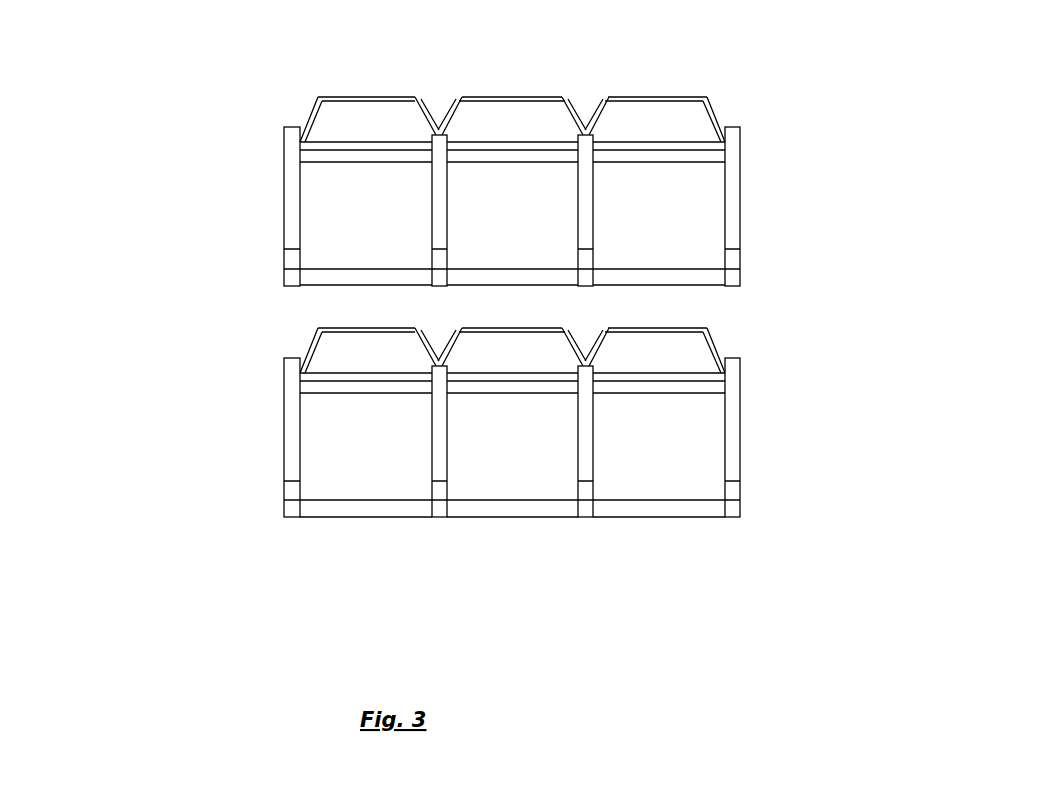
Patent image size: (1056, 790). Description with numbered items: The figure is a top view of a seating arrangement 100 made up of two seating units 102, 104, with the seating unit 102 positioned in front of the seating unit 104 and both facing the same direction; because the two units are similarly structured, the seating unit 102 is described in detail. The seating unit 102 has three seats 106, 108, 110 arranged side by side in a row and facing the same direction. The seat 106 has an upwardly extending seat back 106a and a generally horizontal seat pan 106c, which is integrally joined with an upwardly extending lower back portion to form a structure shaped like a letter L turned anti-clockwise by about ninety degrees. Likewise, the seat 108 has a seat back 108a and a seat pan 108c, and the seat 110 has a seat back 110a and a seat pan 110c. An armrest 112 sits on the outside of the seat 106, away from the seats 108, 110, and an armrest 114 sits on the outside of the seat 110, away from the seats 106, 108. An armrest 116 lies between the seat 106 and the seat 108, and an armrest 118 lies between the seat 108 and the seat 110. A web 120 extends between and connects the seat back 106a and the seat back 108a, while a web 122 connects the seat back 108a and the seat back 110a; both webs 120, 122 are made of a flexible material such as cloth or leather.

The seating arrangement 100 is at (795, 124).
The seating unit 102 is at (733, 421).
The seating unit 104 is at (733, 208).
The seat 106 is at (325, 480).
The seat back 106a is at (355, 349).
The seat pan 106c is at (365, 478).
The seat 108 is at (495, 460).
The seat back 108a is at (523, 350).
The seat pan 108c is at (525, 477).
The seat 110 is at (688, 405).
The seat back 110a is at (668, 352).
The seat pan 110c is at (668, 478).
The armrest 112 is at (297, 455).
The armrest 114 is at (733, 460).
The armrest 116 is at (437, 467).
The armrest 118 is at (582, 500).
The web 120 is at (420, 352).
The web 122 is at (607, 337).